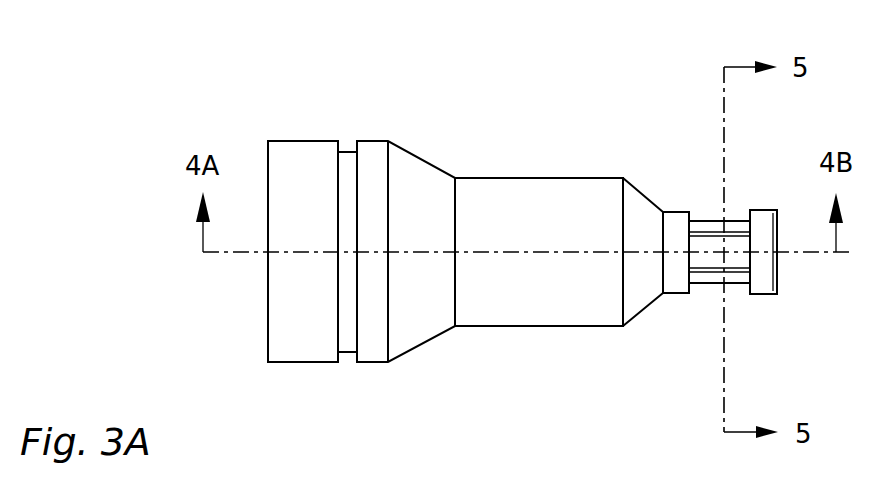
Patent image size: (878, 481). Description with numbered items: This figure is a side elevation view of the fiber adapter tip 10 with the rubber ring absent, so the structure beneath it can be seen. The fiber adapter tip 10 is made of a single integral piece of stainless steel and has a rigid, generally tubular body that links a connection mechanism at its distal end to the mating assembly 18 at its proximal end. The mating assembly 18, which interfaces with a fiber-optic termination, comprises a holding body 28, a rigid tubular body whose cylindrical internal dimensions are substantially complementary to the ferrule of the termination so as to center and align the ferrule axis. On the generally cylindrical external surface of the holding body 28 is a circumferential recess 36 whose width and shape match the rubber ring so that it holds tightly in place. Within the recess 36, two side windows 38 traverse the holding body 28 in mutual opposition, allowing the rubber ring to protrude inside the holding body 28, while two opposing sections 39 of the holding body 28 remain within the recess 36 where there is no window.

The fiber adapter tip 10 is at (496, 106).
The mating assembly 18 is at (670, 210).
The holding body 28 is at (670, 293).
The circumferential recess 36 is at (693, 215).
The side windows 38 is at (708, 263).
The opposing sections 39 is at (735, 217).